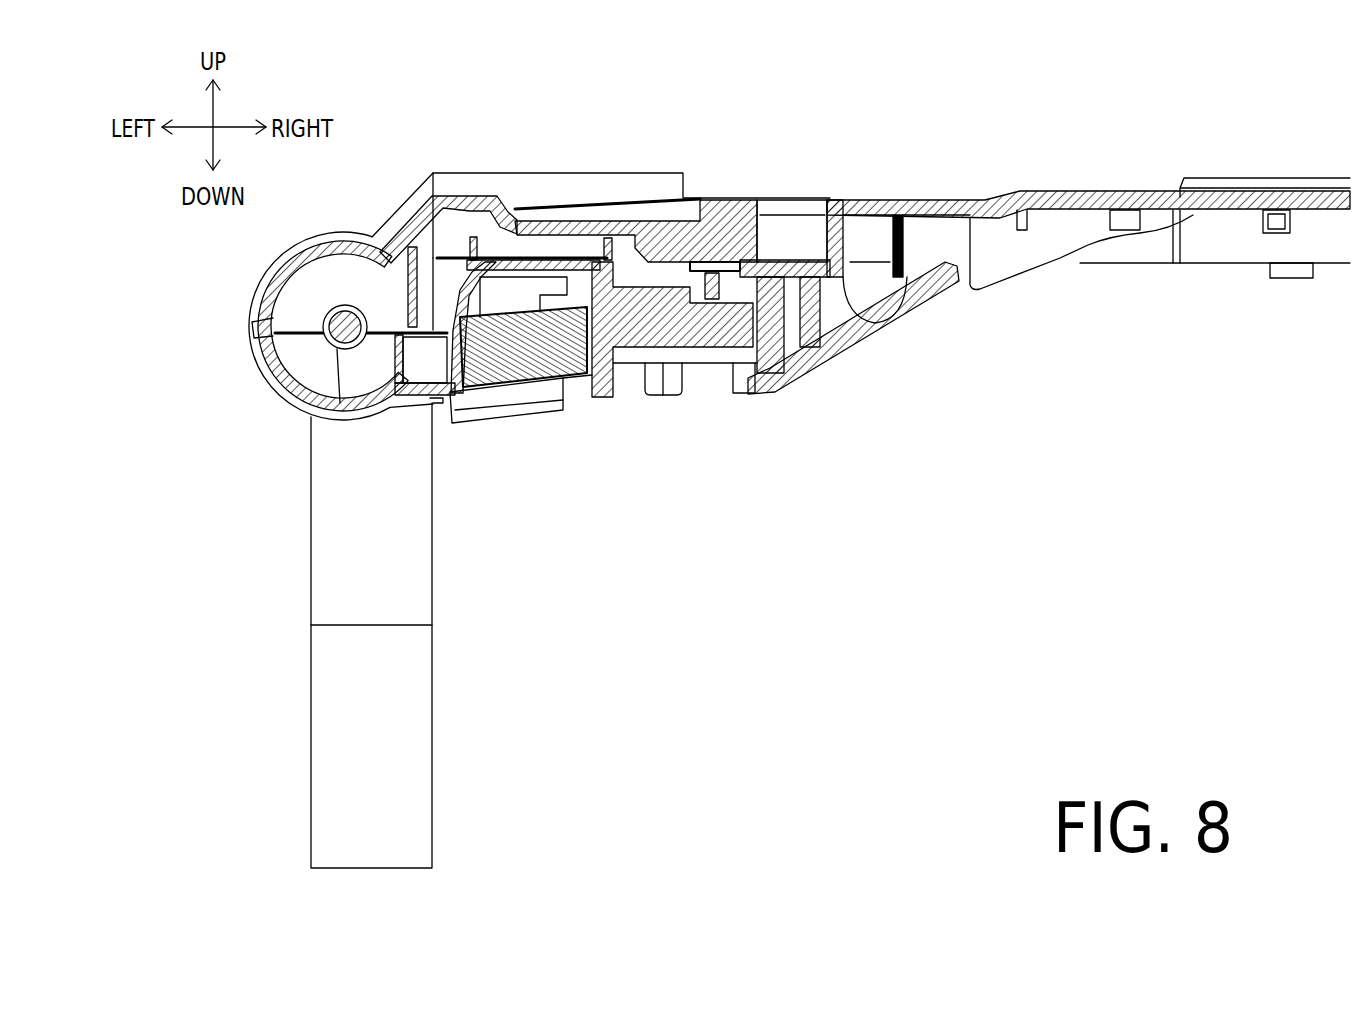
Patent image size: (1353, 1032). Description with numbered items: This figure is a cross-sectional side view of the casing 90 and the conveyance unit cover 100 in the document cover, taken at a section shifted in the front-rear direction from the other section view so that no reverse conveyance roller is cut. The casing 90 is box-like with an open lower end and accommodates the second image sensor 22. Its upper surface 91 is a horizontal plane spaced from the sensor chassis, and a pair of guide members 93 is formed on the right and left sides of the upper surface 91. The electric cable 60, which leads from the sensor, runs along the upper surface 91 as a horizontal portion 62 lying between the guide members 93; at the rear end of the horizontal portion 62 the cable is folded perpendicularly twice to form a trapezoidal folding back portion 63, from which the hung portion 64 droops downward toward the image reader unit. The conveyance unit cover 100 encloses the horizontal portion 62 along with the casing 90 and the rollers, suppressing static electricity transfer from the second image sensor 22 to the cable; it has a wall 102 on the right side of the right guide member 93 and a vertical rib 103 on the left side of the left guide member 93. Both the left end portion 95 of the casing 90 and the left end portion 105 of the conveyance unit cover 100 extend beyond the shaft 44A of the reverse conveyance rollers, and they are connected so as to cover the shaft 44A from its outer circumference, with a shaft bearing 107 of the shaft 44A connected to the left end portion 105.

The second image sensor 22 is at (572, 378).
The shaft 44A is at (324, 306).
The electric cable 60 is at (302, 592).
The horizontal portion 62 is at (532, 258).
The folding back portion 63 is at (440, 298).
The hung portion 64 is at (433, 532).
The casing 90 is at (404, 226).
The upper surface 91 is at (488, 256).
The guide members 93 is at (474, 237).
The left end portion 95 is at (272, 373).
The conveyance unit cover 100 is at (577, 224).
The wall 102 is at (634, 262).
The vertical rib 103 is at (392, 257).
The left end portion 105 is at (278, 272).
The shaft bearing 107 is at (272, 317).